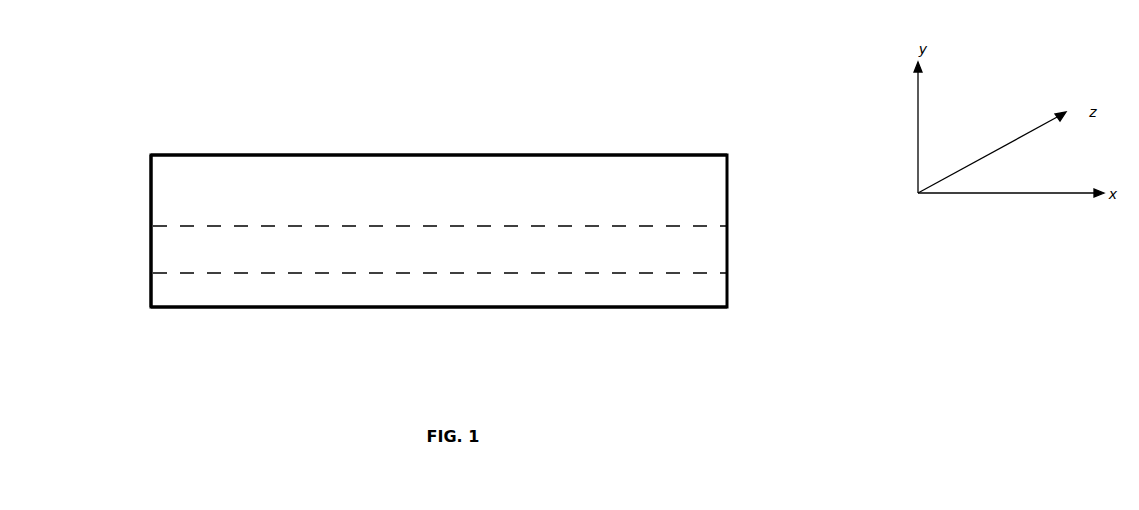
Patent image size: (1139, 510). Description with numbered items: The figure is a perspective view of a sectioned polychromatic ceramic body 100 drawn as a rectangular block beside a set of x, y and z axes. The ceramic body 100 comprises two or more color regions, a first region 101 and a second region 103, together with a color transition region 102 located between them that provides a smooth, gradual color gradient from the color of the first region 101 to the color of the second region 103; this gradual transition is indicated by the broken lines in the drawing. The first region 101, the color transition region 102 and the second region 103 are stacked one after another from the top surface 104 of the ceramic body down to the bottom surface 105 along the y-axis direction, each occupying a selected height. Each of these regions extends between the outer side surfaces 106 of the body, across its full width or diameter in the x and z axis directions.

The polychromatic ceramic body 100 is at (467, 145).
The first color region 101 is at (738, 220).
The color transition region 102 is at (738, 228).
The second color region 103 is at (738, 275).
The top surface 104 is at (307, 154).
The bottom surface 105 is at (308, 308).
The outer side surfaces 106 is at (150, 232).